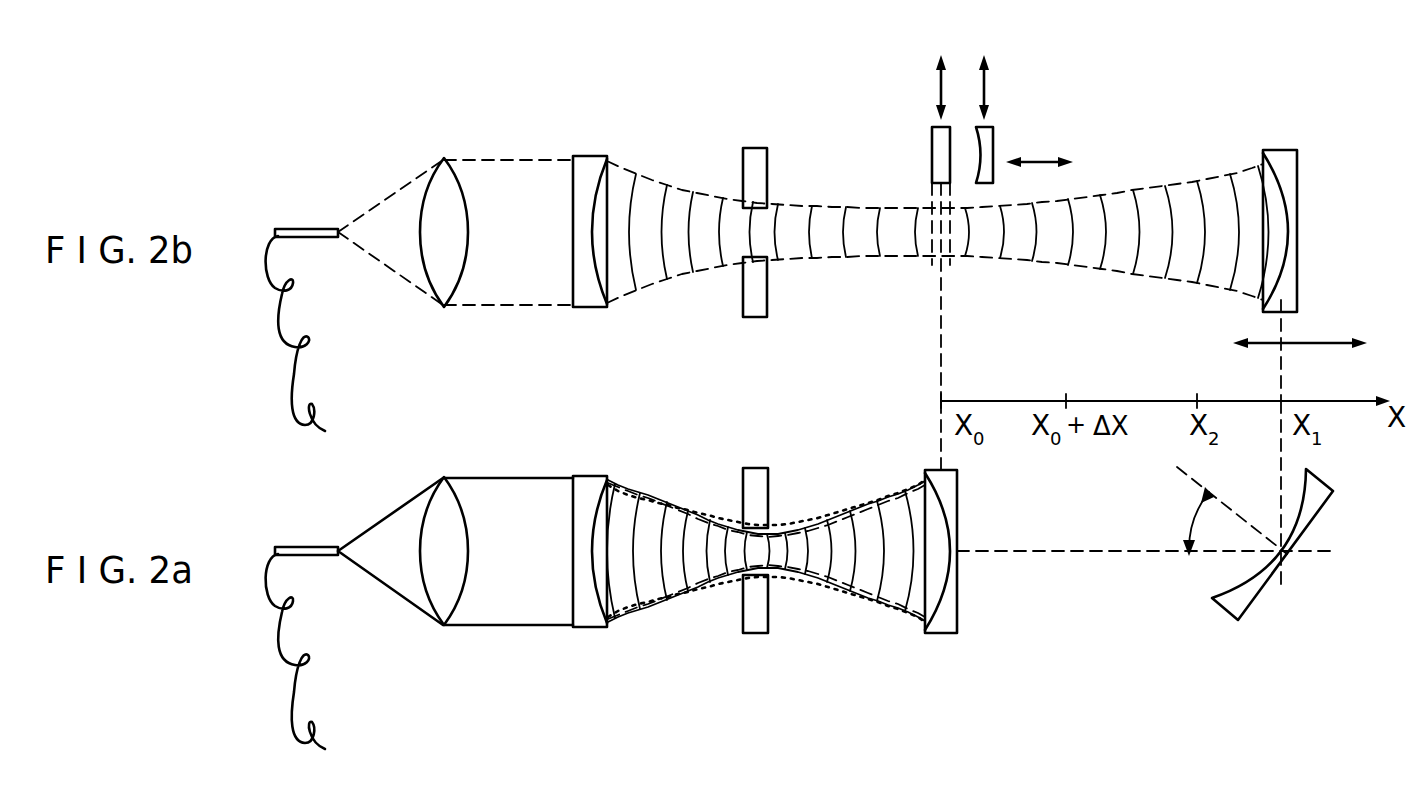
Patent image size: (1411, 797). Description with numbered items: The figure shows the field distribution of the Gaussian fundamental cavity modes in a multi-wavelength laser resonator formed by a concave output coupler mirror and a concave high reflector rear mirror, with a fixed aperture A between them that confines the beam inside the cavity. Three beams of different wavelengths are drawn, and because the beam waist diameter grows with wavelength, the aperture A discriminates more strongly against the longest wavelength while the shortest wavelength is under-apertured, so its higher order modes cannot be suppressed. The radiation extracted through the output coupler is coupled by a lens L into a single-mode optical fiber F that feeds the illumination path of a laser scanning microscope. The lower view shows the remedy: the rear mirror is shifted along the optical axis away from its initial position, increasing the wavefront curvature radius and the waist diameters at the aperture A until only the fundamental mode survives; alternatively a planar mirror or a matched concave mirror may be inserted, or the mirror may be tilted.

In FIG. 2B, the single-mode optical fiber F is at (318, 231).
In FIG. 2A, the single-mode optical fiber F is at (318, 549).
In FIG. 2B, the lens L is at (447, 162).
In FIG. 2A, the lens L is at (447, 479).
In FIG. 2B, the fixed aperture A is at (760, 150).
In FIG. 2A, the fixed aperture A is at (765, 490).